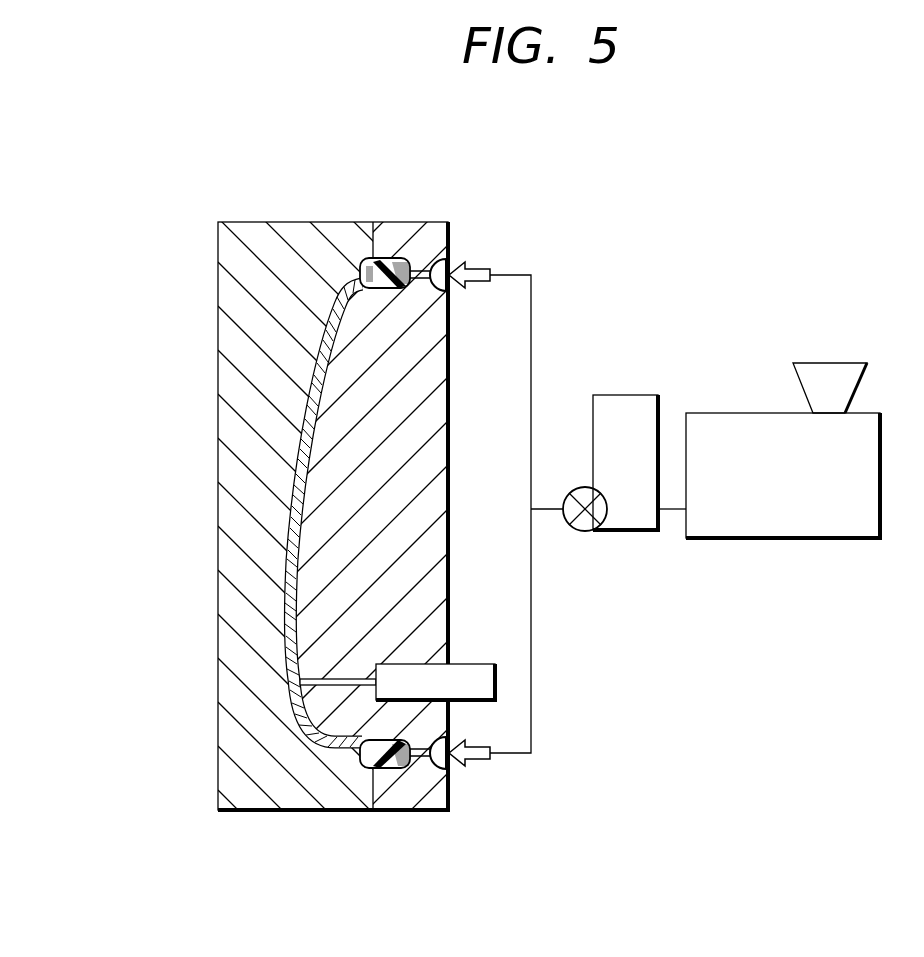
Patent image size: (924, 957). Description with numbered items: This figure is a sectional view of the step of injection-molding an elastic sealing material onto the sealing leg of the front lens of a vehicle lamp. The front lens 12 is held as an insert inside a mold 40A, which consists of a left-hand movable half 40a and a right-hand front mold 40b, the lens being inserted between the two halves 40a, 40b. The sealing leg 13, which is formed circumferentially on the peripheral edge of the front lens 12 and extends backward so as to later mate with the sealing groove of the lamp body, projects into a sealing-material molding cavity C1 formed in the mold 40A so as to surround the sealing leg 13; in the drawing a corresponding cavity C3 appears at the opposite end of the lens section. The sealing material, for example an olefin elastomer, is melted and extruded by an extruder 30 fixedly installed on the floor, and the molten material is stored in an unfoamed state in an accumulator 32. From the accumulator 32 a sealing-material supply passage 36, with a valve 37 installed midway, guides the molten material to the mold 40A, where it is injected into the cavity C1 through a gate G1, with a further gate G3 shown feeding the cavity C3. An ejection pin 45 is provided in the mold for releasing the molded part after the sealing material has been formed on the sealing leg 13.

The mold 40A is at (333, 478).
The left-hand movable half 40a is at (288, 222).
The right-hand front mold 40b is at (248, 158).
The front lens 12 is at (300, 392).
The sealing leg 13 is at (386, 268).
The sealing-material molding cavity C1 is at (402, 261).
The third cavity portion C3 is at (406, 773).
The gate G1 is at (452, 262).
The third gas inlet G3 is at (452, 772).
The sealing-material supply passage 36 is at (531, 682).
The ejection pin 45 is at (343, 686).
The valve 37 is at (585, 532).
The accumulator 32 is at (640, 395).
The extruder 30 is at (850, 542).